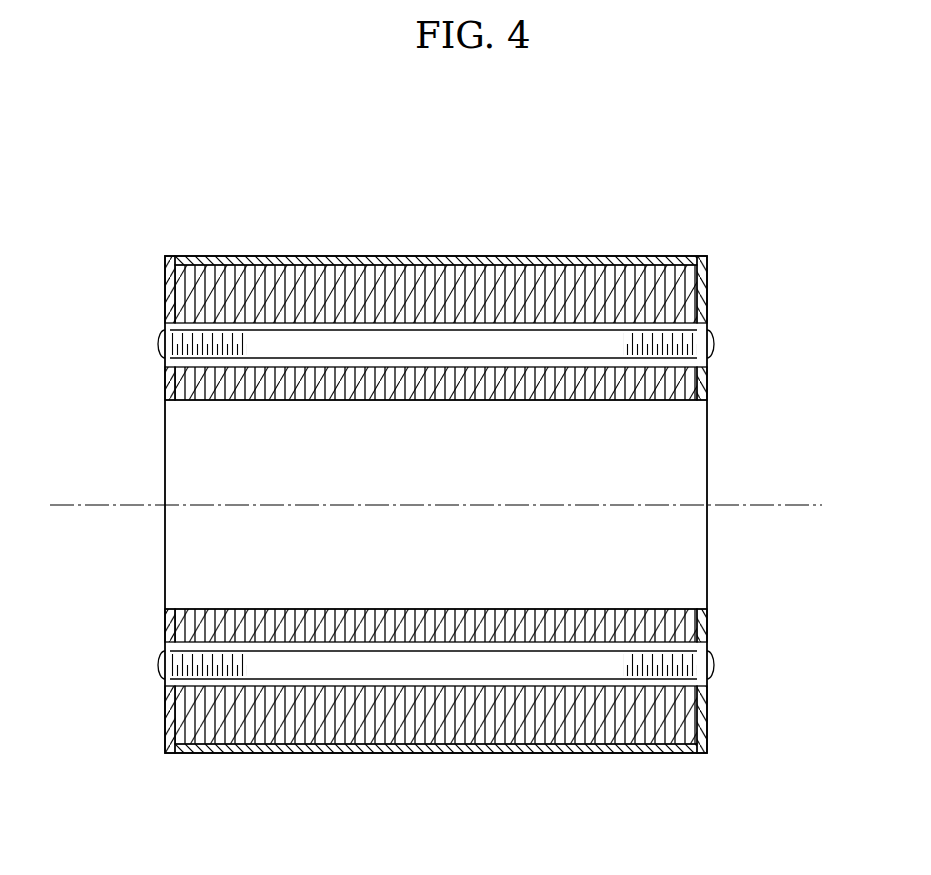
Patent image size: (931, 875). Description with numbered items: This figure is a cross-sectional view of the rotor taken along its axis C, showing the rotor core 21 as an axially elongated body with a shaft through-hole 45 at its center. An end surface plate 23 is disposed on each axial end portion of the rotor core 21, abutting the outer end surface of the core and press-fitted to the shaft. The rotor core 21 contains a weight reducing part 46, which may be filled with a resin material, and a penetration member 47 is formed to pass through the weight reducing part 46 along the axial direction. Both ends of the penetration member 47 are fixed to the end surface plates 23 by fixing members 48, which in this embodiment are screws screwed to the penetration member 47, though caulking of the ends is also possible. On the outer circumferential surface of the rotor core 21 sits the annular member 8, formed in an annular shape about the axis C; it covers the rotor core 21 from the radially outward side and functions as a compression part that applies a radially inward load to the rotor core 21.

The annular member 8 is at (610, 262).
The rotor core 21 is at (540, 272).
The end surface plate 23 is at (172, 256).
The shaft through-hole 45 is at (653, 400).
The weight reducing part 46 is at (673, 341).
The penetration member 47 is at (370, 330).
The fixing member 48 is at (158, 343).
The axis C is at (95, 503).